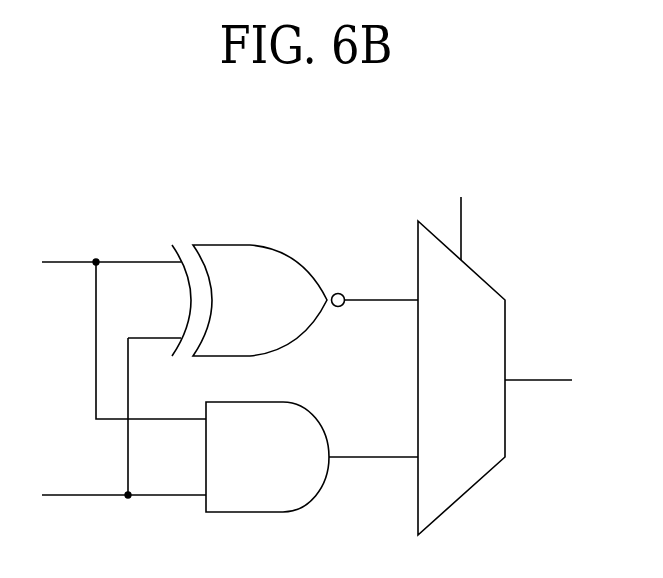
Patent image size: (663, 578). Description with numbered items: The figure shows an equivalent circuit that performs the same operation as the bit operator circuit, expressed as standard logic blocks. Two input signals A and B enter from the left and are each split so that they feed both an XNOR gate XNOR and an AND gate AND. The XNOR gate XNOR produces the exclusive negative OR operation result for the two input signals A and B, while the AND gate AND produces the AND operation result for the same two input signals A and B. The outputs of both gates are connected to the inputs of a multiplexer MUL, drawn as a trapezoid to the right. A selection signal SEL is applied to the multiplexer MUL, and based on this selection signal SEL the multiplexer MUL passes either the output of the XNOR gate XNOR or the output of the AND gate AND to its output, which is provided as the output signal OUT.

The input signal A is at (115, 334).
The input signal B is at (115, 423).
The XNOR gate XNOR is at (295, 300).
The AND gate AND is at (312, 457).
The multiplexer MUL is at (461, 378).
The selection signal SEL is at (461, 213).
The output signal OUT is at (561, 381).